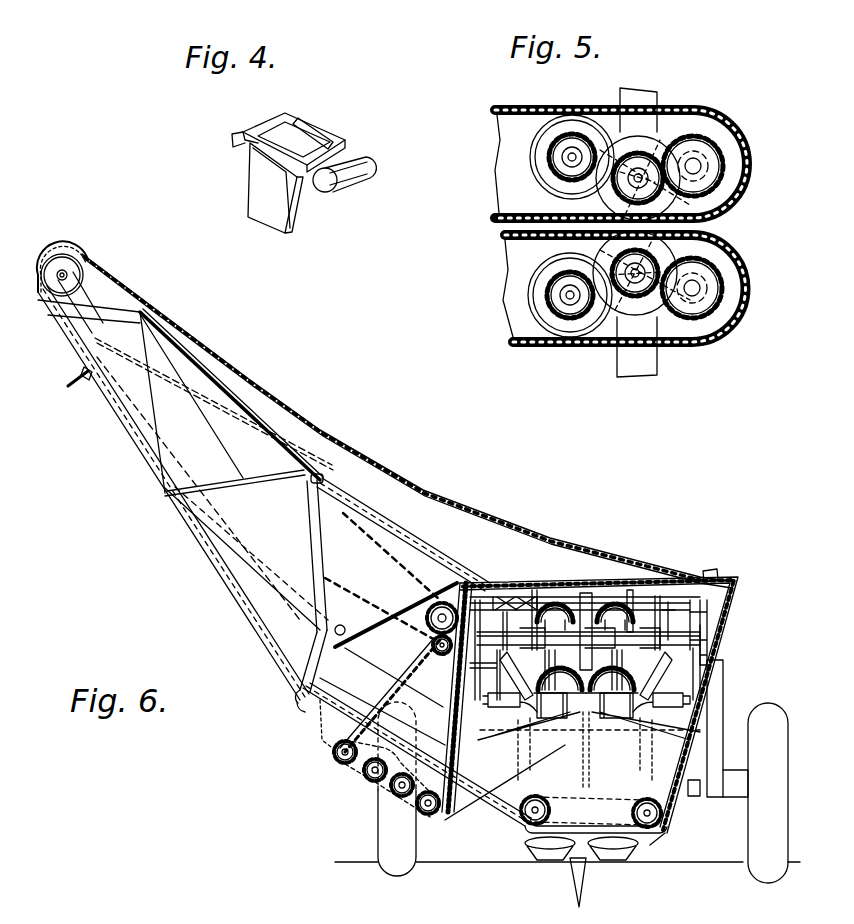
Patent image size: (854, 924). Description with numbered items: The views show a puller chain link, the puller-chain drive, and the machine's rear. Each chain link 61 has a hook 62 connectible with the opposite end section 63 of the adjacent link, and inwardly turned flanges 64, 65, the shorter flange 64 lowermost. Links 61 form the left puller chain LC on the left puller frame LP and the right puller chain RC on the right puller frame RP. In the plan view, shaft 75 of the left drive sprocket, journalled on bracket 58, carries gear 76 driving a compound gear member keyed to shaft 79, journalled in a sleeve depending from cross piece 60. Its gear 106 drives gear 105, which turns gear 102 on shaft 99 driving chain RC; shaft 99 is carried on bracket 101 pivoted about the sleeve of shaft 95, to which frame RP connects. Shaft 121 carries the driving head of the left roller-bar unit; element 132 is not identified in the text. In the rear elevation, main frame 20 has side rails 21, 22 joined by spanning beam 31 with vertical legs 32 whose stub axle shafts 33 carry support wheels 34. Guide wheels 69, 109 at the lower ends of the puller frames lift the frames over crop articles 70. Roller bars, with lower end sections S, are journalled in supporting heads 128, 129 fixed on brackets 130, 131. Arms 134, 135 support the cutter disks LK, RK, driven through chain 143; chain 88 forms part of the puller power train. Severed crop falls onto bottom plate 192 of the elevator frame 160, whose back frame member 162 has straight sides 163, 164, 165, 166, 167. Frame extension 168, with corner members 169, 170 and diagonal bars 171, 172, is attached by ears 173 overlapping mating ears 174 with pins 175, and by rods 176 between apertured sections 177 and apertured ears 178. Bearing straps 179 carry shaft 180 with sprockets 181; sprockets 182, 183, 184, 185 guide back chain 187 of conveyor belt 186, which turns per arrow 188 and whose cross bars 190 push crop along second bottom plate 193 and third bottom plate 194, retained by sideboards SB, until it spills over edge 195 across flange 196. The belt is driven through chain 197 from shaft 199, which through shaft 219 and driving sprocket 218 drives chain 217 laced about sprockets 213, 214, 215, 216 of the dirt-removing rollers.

In FIG. 4, the chain link 61 is at (290, 116).
In FIG. 4, the hook 62 is at (336, 190).
In FIG. 4, the opposite end section 63 is at (258, 128).
In FIG. 4, the shorter flange 64 is at (323, 141).
In FIG. 4, the flange 65 is at (250, 198).
In FIG. 5, the shaft 95 is at (637, 176).
In FIG. 5, the gear 105 is at (655, 130).
In FIG. 5, the gear 102 is at (720, 138).
In FIG. 5, the right puller chain RC is at (752, 147).
In FIG. 5, the shaft 99 is at (700, 166).
In FIG. 5, the bracket 101 is at (715, 221).
In FIG. 5, the bracket 58 is at (715, 255).
In FIG. 5, the gear 76 is at (722, 275).
In FIG. 5, the shaft 75 is at (702, 289).
In FIG. 5, the left puller chain LC is at (744, 328).
In FIG. 5, the cross piece 60 is at (655, 360).
In FIG. 5, the gear 106 is at (633, 285).
In FIG. 5, the shaft 79 is at (633, 280).
In FIG. 5, the upper roller 132 is at (568, 300).
In FIG. 5, the shaft 121 is at (560, 310).
In FIG. 5, the left puller frame LP is at (507, 270).
In FIG. 6, the left puller frame LP is at (553, 763).
In FIG. 5, the right puller frame RP is at (497, 139).
In FIG. 6, the right puller frame RP is at (608, 763).
In FIG. 6, the sprockets 181 is at (58, 252).
In FIG. 6, the shaft 180 is at (66, 272).
In FIG. 6, the bearing straps 179 is at (92, 260).
In FIG. 6, the diagonal reinforcing bar 171 is at (142, 372).
In FIG. 6, the longitudinal corner member 170 is at (245, 410).
In FIG. 6, the apertured ears 178 is at (320, 472).
In FIG. 6, the back chain 187 is at (350, 450).
In FIG. 6, the conveyor belt 186 is at (428, 483).
In FIG. 6, the arrow 188 is at (492, 500).
In FIG. 6, the angle iron cross bars 190 is at (548, 537).
In FIG. 6, the chain 143 is at (630, 592).
In FIG. 6, the sprocket 182 is at (708, 571).
In FIG. 6, the back frame member 162 is at (735, 592).
In FIG. 6, the straight side 163 is at (728, 618).
In FIG. 6, the arm 135 is at (708, 660).
In FIG. 6, the spanning beam 31 is at (786, 647).
In FIG. 6, the main frame 20 is at (734, 671).
In FIG. 6, the vertical legs 32 is at (720, 705).
In FIG. 6, the right cutter disk RK is at (690, 728).
In FIG. 6, the left cutter disk LK is at (589, 725).
In FIG. 6, the side rail member 22 is at (692, 792).
In FIG. 6, the sprocket 183 is at (668, 815).
In FIG. 6, the elevator frame 160 is at (668, 840).
In FIG. 6, the straight side 167 is at (652, 845).
In FIG. 6, the stub axle shafts 33 is at (733, 800).
In FIG. 6, the support wheels 34 is at (377, 834).
In FIG. 6, the frusto-conical guide wheel 109 is at (626, 860).
In FIG. 6, the crop articles 70 is at (575, 880).
In FIG. 6, the frusto-conical guide 69 is at (535, 858).
In FIG. 6, the straight side 166 is at (487, 810).
In FIG. 6, the side rail member 21 is at (485, 800).
In FIG. 6, the sprocket 216 is at (436, 816).
In FIG. 6, the sprocket 215 is at (393, 792).
In FIG. 6, the sprocket 214 is at (366, 774).
In FIG. 6, the sprocket 213 is at (335, 758).
In FIG. 6, the second bottom plate 193 is at (322, 728).
In FIG. 6, the sprocket 185 is at (283, 651).
In FIG. 6, the sideboards SB is at (220, 570).
In FIG. 6, the ears 173 is at (318, 608).
In FIG. 6, the mating ears 174 is at (350, 619).
In FIG. 6, the pins 175 is at (345, 627).
In FIG. 6, the straight side 165 is at (410, 608).
In FIG. 6, the shaft 219 is at (432, 643).
In FIG. 6, the driving sprocket 218 is at (415, 655).
In FIG. 6, the chain 217 is at (365, 712).
In FIG. 6, the arm 134 is at (462, 680).
In FIG. 6, the shaft 199 is at (444, 600).
In FIG. 6, the apertured sections 177 is at (470, 583).
In FIG. 6, the chain 88 is at (500, 600).
In FIG. 6, the straight side 164 is at (543, 586).
In FIG. 6, the third bottom plate 194 is at (175, 545).
In FIG. 6, the frame extension 168 is at (168, 524).
In FIG. 6, the longitudinal corner member 169 is at (140, 453).
In FIG. 6, the flange 196 is at (76, 385).
In FIG. 6, the upper edge 195 is at (82, 374).
In FIG. 6, the diagonal reinforcing bar 172 is at (250, 478).
In FIG. 6, the rods 176 is at (395, 530).
In FIG. 6, the chain 197 is at (333, 592).
In FIG. 6, the supporting head 128 is at (560, 720).
In FIG. 6, the supporting head 129 is at (612, 720).
In FIG. 6, the bracket 130 is at (520, 750).
In FIG. 6, the bracket 131 is at (648, 750).
In FIG. 6, the sprocket 184 is at (565, 795).
In FIG. 6, the bottom plate 192 is at (590, 812).
In FIG. 6, the lower end sections S is at (570, 669).